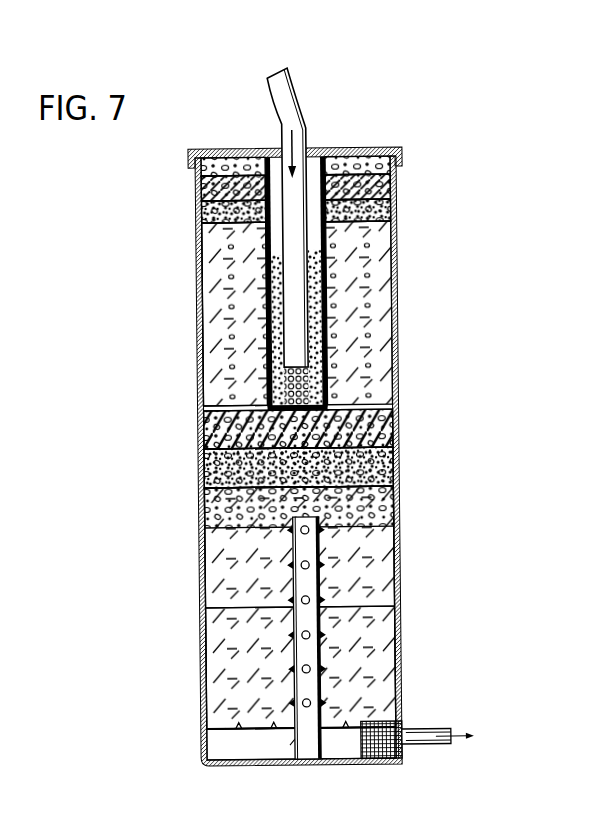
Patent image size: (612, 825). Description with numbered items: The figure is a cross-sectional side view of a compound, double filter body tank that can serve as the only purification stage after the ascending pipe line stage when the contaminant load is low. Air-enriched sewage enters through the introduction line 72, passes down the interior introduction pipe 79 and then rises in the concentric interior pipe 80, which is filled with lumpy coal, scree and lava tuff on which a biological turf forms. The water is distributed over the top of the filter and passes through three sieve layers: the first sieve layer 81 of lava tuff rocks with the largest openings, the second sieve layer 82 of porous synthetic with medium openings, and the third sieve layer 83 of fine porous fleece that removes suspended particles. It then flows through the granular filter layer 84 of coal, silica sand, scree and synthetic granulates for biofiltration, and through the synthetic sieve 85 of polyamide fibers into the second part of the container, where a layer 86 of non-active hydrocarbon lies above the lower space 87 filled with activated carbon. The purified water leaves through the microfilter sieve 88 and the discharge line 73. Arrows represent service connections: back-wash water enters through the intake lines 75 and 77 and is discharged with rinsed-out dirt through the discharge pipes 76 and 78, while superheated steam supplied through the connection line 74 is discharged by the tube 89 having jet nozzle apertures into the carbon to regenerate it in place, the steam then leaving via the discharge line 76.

The introduction line 72 is at (298, 103).
The discharge line 73 is at (435, 727).
The connection for superheated steam 74 is at (238, 748).
The back-wash intake line 75 is at (238, 700).
The back-wash discharge line 76 is at (232, 537).
The back-wash intake line 77 is at (230, 355).
The back-wash discharge line 78 is at (222, 170).
The interior introduction pipe 79 is at (307, 300).
The interior pipe 80 is at (328, 378).
The first sieve layer 81 is at (392, 165).
The second sieve layer 82 is at (395, 185).
The third sieve layer 83 is at (395, 210).
The filter layer 84 is at (366, 307).
The synthetic sieve 85 is at (392, 418).
The layer of non-active hydrocarbon 86 is at (392, 458).
The lower space 87 is at (372, 629).
The microfilter sieve 88 is at (378, 770).
The tube having jet nozzle apertures 89 is at (303, 748).